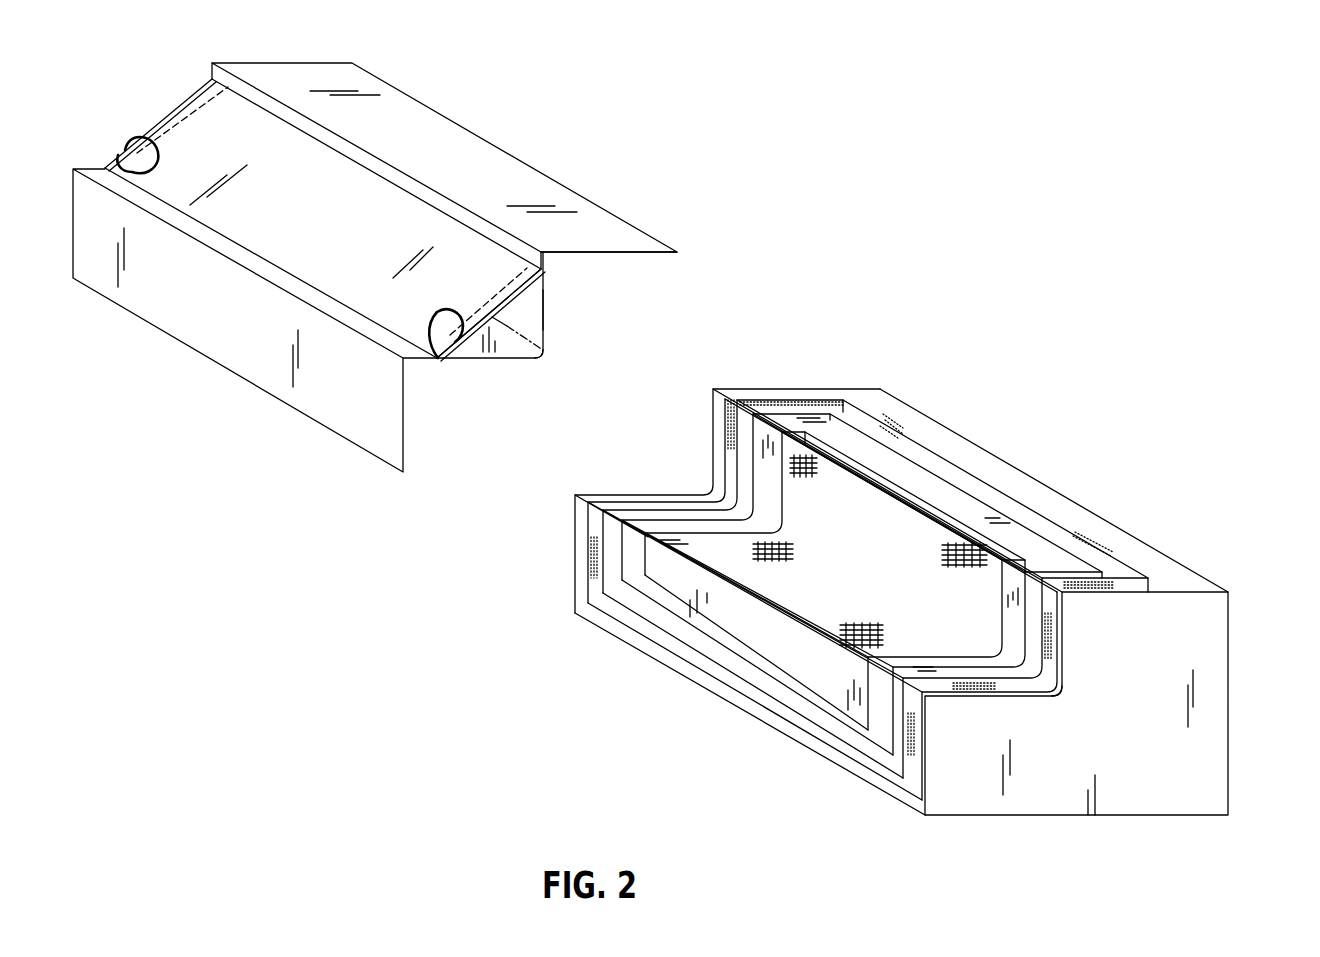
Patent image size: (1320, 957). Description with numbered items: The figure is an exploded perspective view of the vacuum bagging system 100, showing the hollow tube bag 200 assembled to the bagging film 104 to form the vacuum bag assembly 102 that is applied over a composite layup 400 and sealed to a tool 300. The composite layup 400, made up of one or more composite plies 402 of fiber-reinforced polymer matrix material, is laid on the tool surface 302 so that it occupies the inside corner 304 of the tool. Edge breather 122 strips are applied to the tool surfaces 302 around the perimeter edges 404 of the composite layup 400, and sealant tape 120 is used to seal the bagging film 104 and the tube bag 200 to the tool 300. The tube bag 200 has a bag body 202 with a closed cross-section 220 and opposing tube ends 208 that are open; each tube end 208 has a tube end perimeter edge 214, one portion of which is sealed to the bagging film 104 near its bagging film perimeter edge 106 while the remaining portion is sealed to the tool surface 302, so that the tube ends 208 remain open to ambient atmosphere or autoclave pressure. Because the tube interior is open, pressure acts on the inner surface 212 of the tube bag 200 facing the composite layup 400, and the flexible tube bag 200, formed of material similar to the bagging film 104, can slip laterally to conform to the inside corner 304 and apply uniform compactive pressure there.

The vacuum bagging system 100 is at (930, 100).
The vacuum bag assembly 102 is at (378, 256).
The bagging film 104 is at (477, 167).
The bagging film perimeter edge 106 is at (612, 210).
The sealant tape 120 is at (138, 147).
The edge breather 122 is at (697, 523).
The tube bag 200 is at (520, 333).
The bag body 202 is at (547, 308).
The tube ends 208 is at (163, 115).
The inner surface 212 is at (495, 347).
The tube end perimeter edge 214 is at (540, 357).
The closed cross-section 220 is at (547, 328).
The tool 300 is at (946, 602).
The tool surface 302 is at (1110, 535).
The inside corner 304 is at (1060, 685).
The composite layup 400 is at (848, 599).
The composite plies 402 is at (952, 550).
The perimeter edge 404 is at (690, 540).